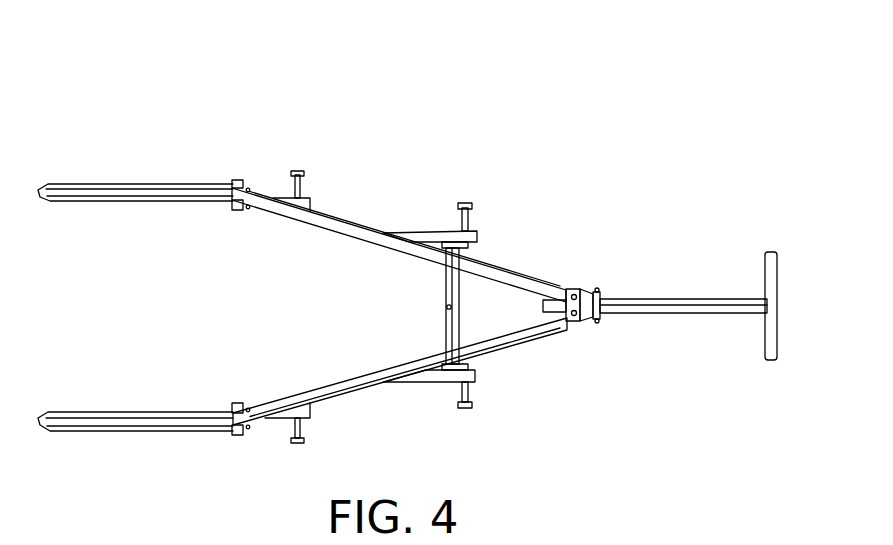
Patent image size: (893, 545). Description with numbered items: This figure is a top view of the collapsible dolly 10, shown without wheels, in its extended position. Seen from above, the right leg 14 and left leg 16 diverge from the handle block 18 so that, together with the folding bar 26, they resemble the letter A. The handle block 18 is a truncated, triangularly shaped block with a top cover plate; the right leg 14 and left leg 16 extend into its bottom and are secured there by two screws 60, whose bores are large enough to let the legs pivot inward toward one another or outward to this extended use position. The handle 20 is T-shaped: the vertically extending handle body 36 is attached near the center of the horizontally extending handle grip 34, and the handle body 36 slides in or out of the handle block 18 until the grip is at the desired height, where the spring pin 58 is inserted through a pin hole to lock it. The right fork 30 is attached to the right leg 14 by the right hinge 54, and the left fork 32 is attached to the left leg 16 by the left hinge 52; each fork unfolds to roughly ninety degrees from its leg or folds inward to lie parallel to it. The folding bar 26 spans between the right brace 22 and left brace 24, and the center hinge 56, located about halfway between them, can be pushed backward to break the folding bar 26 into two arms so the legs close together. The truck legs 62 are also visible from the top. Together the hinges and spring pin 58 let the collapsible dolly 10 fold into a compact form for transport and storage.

The collapsible dolly 10 is at (606, 98).
The right leg 14 is at (366, 238).
The left leg 16 is at (385, 368).
The handle block 18 is at (591, 340).
The handle 20 is at (709, 292).
The right brace 22 is at (425, 240).
The left brace 24 is at (440, 378).
The folding bar 26 is at (458, 326).
The right fork 30 is at (82, 190).
The left fork 32 is at (62, 412).
The handle grip 34 is at (773, 330).
The handle body 36 is at (641, 313).
The left hinge 52 is at (233, 422).
The right hinge 54 is at (231, 190).
The center hinge 56 is at (446, 307).
The spring pin 58 is at (600, 292).
The screws 60 is at (572, 296).
The truck legs 62 is at (296, 172).